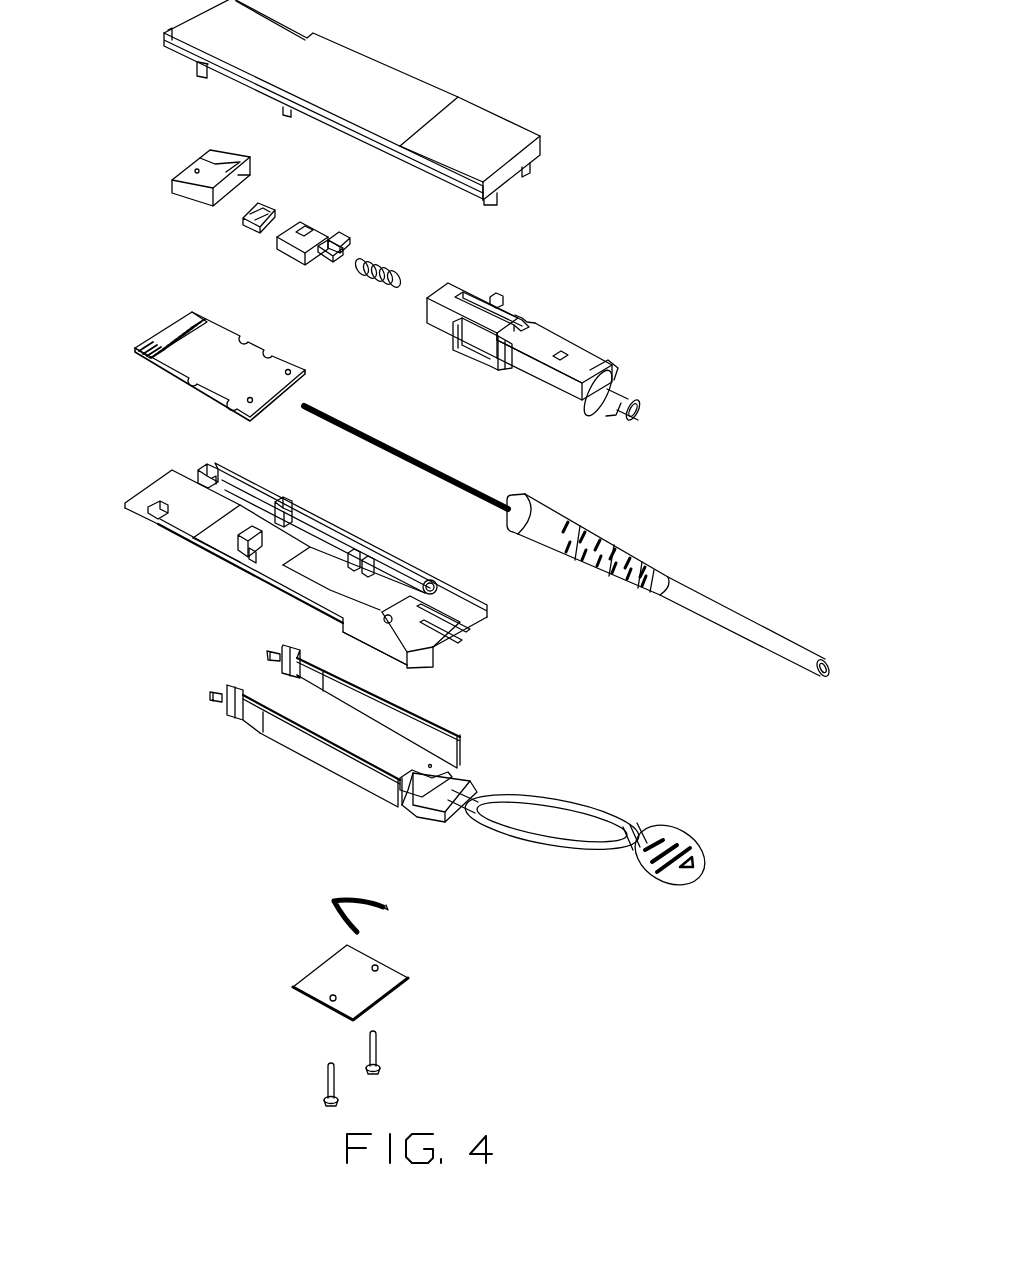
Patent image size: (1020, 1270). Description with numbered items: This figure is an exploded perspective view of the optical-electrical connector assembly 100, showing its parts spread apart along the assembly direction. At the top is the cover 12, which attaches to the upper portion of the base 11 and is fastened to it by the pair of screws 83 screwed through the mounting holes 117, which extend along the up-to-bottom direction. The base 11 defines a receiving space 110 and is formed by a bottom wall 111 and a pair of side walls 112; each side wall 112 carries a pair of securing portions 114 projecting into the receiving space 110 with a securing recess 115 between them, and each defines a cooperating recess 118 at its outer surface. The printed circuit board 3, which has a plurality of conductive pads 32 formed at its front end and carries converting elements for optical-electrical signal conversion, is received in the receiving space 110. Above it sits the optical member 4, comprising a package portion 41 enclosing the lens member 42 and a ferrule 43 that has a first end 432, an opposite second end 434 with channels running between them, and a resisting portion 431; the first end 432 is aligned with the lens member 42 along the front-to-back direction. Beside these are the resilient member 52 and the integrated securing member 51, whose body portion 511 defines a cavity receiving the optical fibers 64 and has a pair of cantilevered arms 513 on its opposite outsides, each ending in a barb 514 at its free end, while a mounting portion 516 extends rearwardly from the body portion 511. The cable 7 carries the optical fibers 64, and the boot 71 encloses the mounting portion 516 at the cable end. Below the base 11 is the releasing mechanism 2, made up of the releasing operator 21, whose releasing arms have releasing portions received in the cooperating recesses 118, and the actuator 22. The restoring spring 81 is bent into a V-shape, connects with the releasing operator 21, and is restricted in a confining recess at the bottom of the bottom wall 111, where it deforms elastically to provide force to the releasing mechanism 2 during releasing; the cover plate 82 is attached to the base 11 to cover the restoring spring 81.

The optical-electrical connector assembly 100 is at (128, 1036).
The cover 12 is at (377, 100).
The optical member 4 is at (256, 291).
The package portion 41 is at (198, 196).
The lens member 42 is at (250, 228).
The ferrule 43 is at (304, 249).
The resisting portion 431 is at (355, 222).
The first end 432 is at (286, 235).
The second end 434 is at (336, 260).
The resilient member 52 is at (380, 262).
The printed circuit board 3 is at (199, 360).
The conductive pads 32 is at (160, 330).
The integrated securing member 51 is at (578, 326).
The body portion 511 is at (452, 296).
The cantilevered arms 513 is at (520, 312).
The barb 514 is at (498, 298).
The mounting portion 516 is at (637, 393).
The optical fibers 64 is at (440, 470).
The cable 7 is at (669, 573).
The boot 71 is at (532, 505).
The base 11 is at (336, 584).
The receiving space 110 is at (275, 548).
The bottom wall 111 is at (310, 570).
The side walls 112 is at (400, 562).
The securing portions 114 is at (355, 545).
The securing recess 115 is at (364, 558).
The mounting holes 117 is at (388, 642).
The cooperating recess 118 is at (260, 555).
The releasing mechanism 2 is at (272, 813).
The releasing operator 21 is at (350, 768).
The actuator 22 is at (485, 825).
The restoring spring 81 is at (330, 902).
The cover plate 82 is at (337, 975).
The screws 83 is at (322, 1078).